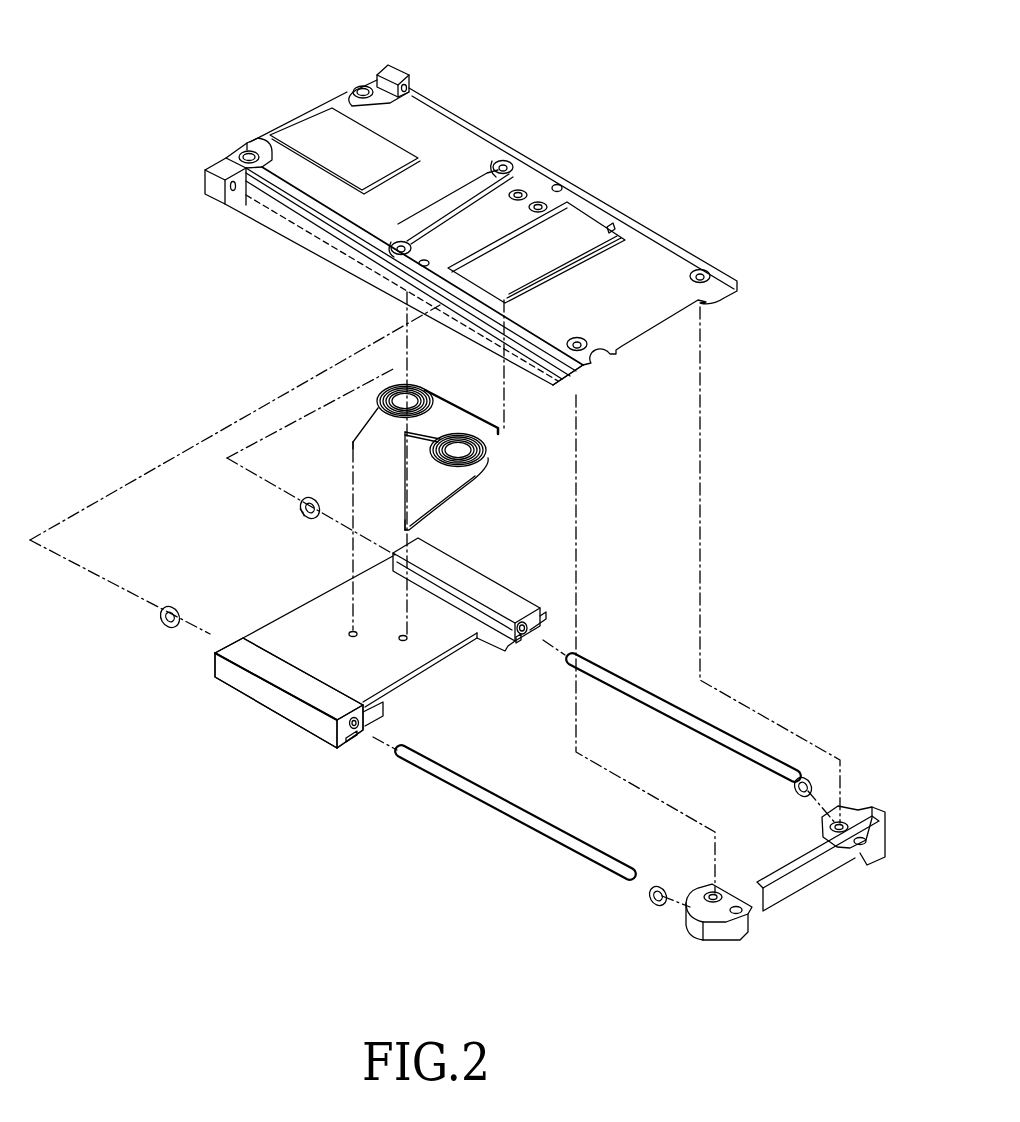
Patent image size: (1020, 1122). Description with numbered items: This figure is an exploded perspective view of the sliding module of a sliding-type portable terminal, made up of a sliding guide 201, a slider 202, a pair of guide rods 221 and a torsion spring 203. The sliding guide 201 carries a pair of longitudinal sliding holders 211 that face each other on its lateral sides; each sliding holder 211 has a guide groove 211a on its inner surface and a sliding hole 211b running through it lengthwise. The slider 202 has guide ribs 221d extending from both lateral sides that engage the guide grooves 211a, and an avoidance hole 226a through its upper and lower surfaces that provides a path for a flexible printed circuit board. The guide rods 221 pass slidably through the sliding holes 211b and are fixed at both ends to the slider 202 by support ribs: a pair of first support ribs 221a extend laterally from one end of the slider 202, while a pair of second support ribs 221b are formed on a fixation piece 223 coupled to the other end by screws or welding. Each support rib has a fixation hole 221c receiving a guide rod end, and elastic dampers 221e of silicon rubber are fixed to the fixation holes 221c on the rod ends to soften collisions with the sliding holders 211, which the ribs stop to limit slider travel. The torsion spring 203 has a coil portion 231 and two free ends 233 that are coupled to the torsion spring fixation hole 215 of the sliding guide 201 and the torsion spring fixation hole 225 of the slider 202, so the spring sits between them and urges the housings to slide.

The sliding guide 201 is at (223, 686).
The slider 202 is at (610, 124).
The torsion spring 203 is at (484, 499).
The sliding holder 211 is at (465, 576).
The guide groove 211a is at (385, 715).
The sliding hole 211b is at (523, 622).
The torsion spring fixation hole 215 is at (350, 631).
The guide rod 221 is at (602, 665).
The first support rib 221a is at (388, 65).
The second support rib 221b is at (868, 808).
The fixation hole 221c is at (407, 88).
The guide rib 221d is at (578, 382).
The damper 221e is at (300, 510).
The fixation piece 223 is at (796, 860).
The torsion spring fixation hole 225 is at (510, 163).
The avoidance hole 226a is at (613, 227).
The coil portion 231 is at (398, 393).
The free end 233 is at (353, 443).